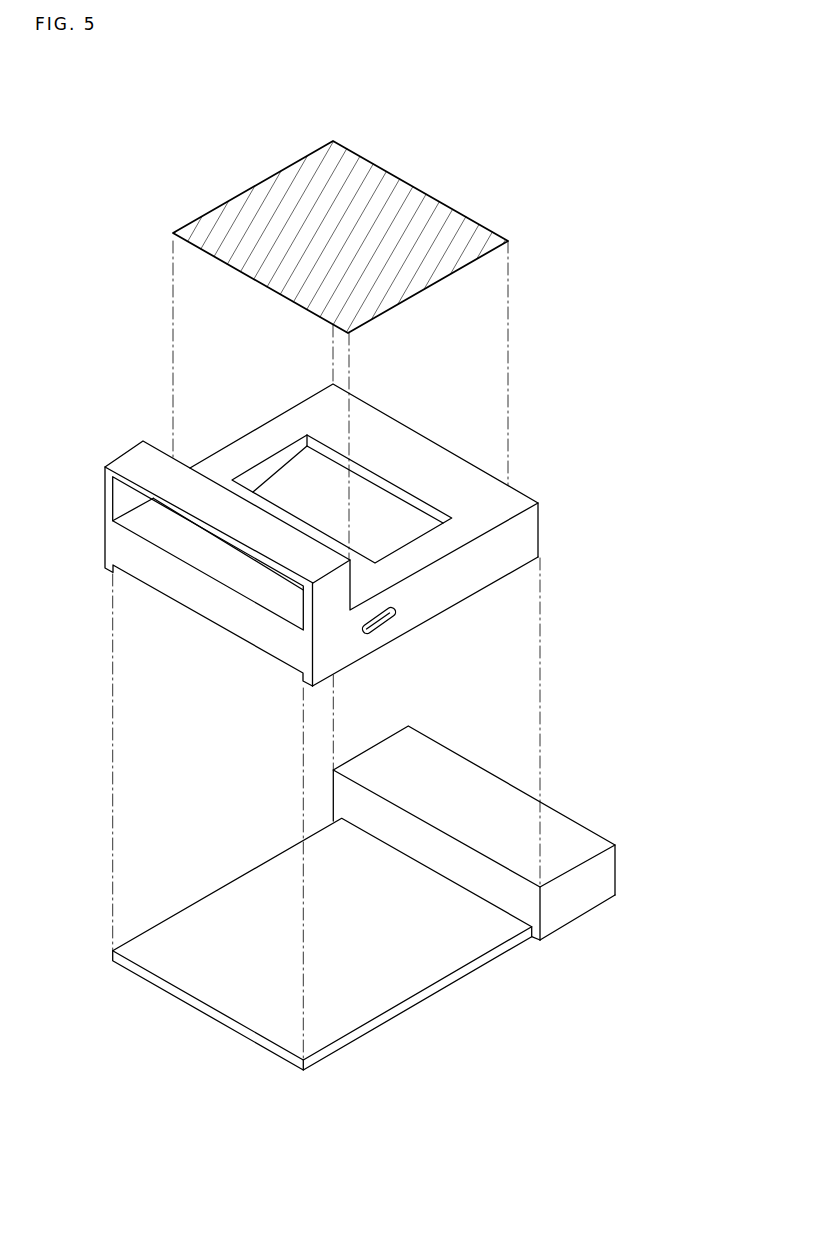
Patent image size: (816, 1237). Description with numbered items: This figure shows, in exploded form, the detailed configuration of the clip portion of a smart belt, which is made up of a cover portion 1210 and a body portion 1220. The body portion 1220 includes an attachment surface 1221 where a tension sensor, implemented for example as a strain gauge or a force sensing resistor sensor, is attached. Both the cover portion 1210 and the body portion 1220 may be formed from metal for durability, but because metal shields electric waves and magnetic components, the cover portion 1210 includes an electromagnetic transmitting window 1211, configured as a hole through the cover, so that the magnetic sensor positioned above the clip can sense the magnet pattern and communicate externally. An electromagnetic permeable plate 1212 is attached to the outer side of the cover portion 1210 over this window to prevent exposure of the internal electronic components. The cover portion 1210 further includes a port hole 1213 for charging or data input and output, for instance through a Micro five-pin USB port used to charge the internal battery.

The cover portion 1210 is at (396, 495).
The electromagnetic transmitting window 1211 is at (397, 533).
The electromagnetic permeable plate 1212 is at (390, 190).
The port hole 1213 is at (392, 617).
The body portion 1220 is at (418, 898).
The attachment surface 1221 is at (420, 962).